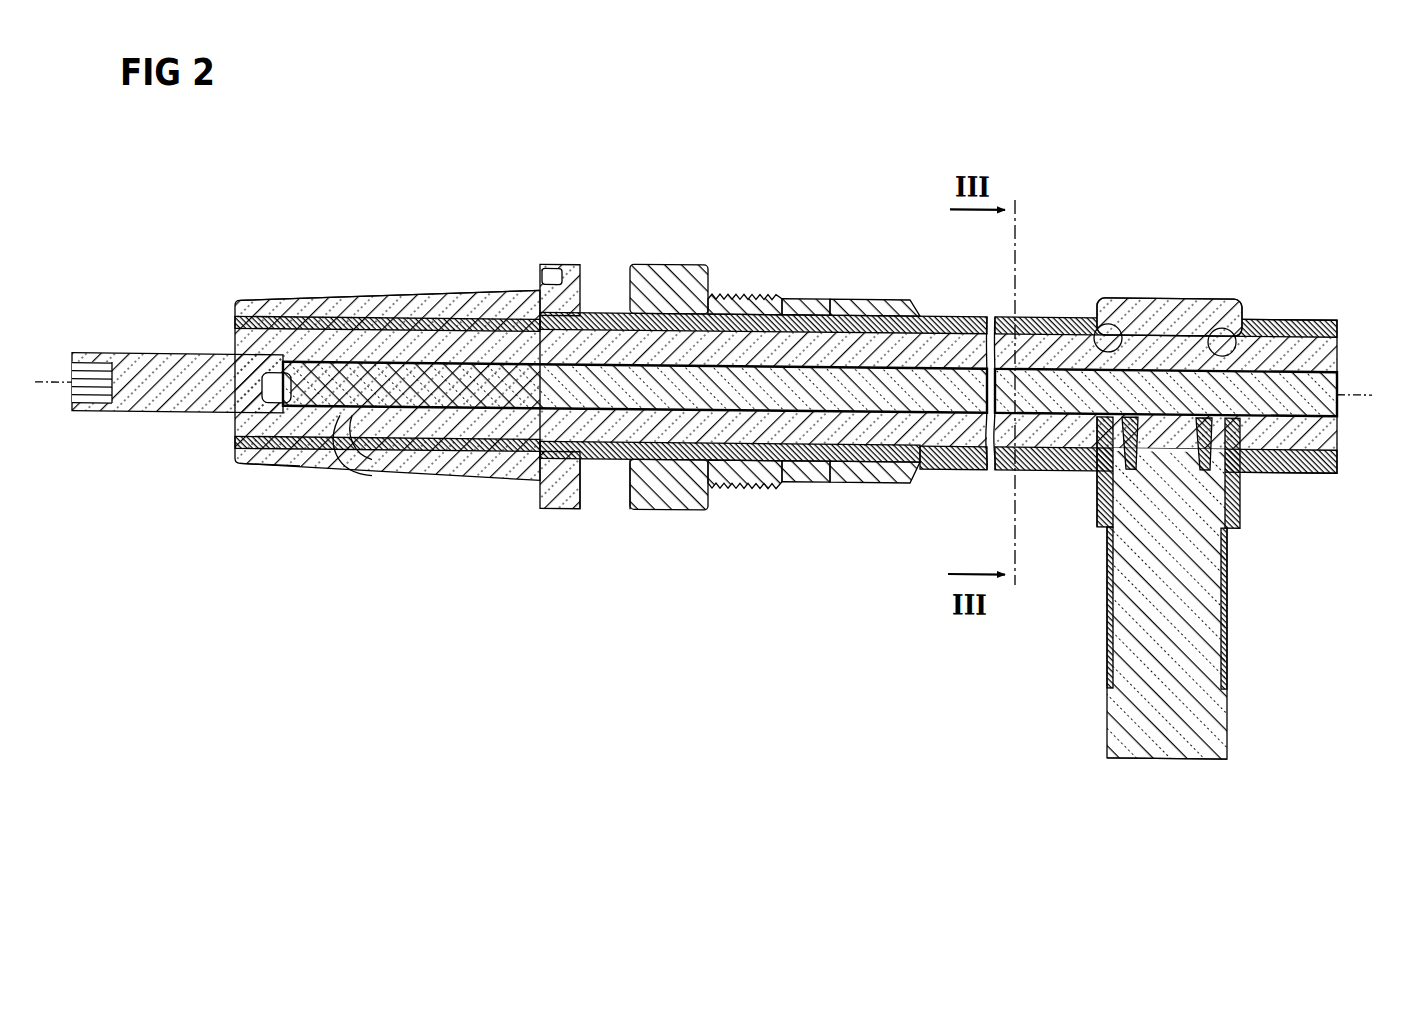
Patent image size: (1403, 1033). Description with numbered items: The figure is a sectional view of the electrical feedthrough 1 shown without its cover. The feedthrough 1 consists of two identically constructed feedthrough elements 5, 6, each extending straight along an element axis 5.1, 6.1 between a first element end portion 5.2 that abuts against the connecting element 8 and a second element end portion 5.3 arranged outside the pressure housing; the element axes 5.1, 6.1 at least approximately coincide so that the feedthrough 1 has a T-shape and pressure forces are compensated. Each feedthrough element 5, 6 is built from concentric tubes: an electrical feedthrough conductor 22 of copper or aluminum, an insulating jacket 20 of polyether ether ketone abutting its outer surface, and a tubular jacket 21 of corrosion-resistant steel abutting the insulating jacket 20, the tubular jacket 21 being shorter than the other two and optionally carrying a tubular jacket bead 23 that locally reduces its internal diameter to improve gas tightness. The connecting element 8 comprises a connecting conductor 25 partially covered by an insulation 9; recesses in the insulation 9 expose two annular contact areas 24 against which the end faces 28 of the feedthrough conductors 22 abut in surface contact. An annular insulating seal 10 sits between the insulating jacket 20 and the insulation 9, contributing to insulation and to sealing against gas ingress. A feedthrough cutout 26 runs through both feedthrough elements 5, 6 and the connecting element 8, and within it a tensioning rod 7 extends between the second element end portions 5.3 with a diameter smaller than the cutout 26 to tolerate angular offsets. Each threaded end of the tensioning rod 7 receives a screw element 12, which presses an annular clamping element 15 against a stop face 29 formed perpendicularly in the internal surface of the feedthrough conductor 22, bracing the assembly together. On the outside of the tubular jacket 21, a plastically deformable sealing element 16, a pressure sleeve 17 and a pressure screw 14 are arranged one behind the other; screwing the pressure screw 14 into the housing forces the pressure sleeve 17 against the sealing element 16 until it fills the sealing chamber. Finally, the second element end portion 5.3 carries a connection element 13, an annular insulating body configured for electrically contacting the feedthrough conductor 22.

The feedthrough 1 is at (395, 214).
The feedthrough element 5 is at (500, 273).
The element axis 5.1 is at (45, 384).
The first element end portion 5.2 is at (1083, 469).
The second element end portion 5.3 is at (265, 480).
The feedthrough element 6 is at (1330, 277).
The element axis 6.1 is at (1361, 429).
The tensioning rod 7 is at (945, 355).
The connecting element 8 is at (1163, 748).
The insulation 9 is at (1165, 294).
The insulating seal 10 is at (1110, 324).
The screw element 12 is at (138, 358).
The connection element 13 is at (325, 297).
The pressure screw 14 is at (675, 261).
The clamping element 15 is at (340, 407).
The sealing element 16 is at (870, 291).
The pressure sleeve 17 is at (815, 292).
The insulating jacket 20 is at (590, 456).
The tubular jacket 21 is at (620, 459).
The feedthrough conductor 22 is at (780, 462).
The tubular jacket bead 23 is at (1063, 460).
The contact area 24 is at (1168, 462).
The connecting conductor 25 is at (1207, 705).
The feedthrough cutout 26 is at (1040, 345).
The end face 28 is at (1085, 304).
The stop face 29 is at (365, 416).